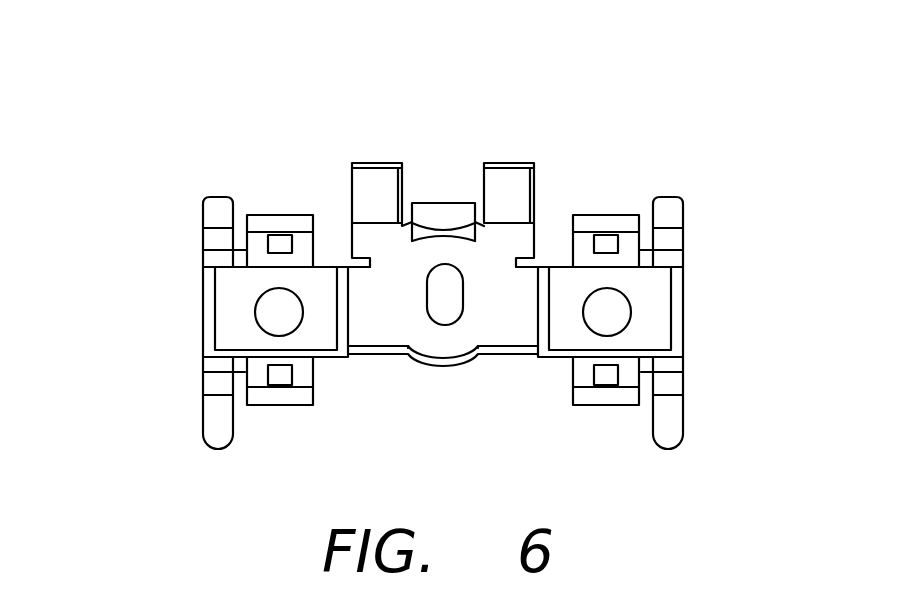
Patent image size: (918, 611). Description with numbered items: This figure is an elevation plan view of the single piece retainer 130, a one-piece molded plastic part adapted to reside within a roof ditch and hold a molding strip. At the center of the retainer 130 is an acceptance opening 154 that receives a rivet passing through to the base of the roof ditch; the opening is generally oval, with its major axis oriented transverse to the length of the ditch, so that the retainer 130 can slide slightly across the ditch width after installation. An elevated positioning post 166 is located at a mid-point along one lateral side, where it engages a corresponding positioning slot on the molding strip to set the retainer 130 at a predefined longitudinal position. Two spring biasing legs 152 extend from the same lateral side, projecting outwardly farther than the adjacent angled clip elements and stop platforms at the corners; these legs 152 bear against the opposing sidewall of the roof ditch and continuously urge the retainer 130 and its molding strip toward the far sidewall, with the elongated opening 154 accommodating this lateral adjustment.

The single piece retainer 130 is at (640, 105).
The spring biasing legs 152 is at (375, 162).
The acceptance opening 154 is at (463, 307).
The positioning post 166 is at (440, 203).